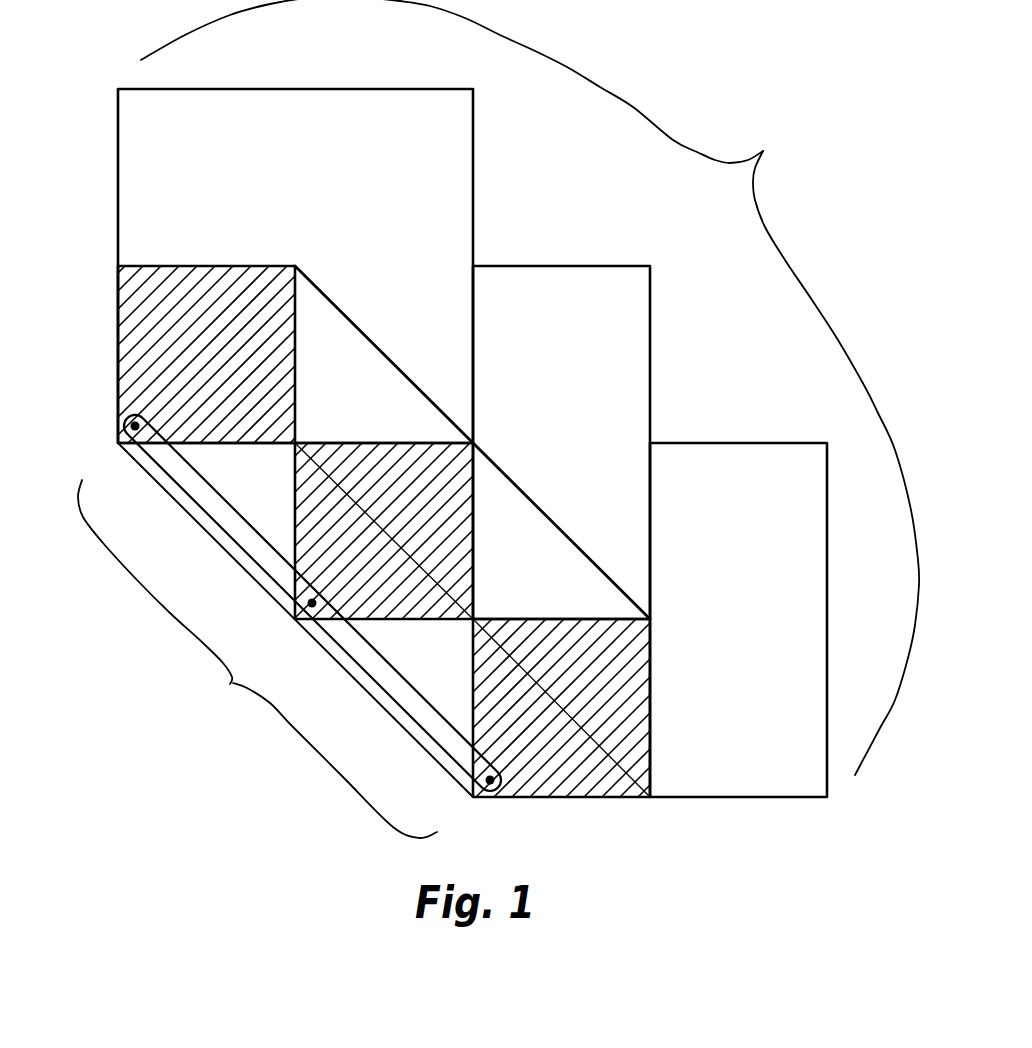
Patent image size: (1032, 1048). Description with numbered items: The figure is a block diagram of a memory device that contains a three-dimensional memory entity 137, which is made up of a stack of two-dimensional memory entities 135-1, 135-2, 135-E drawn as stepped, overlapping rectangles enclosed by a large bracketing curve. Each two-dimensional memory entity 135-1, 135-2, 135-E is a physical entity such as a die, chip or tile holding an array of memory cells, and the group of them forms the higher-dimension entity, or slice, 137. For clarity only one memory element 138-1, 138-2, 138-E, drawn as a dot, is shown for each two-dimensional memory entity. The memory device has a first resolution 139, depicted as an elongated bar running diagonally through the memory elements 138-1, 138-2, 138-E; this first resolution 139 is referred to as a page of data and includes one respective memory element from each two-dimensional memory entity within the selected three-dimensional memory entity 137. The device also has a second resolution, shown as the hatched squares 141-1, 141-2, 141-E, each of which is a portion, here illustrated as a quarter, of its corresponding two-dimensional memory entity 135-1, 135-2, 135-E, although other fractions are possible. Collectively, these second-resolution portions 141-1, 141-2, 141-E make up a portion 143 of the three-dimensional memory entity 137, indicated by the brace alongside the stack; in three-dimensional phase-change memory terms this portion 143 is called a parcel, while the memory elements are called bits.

The two-dimensional memory entity 135-1 is at (371, 100).
The two-dimensional memory entity 135-2 is at (548, 278).
The two-dimensional memory entity 135-E is at (726, 455).
The three-dimensional memory entity 137 is at (530, 387).
The memory element 138-1 is at (124, 420).
The memory element 138-2 is at (302, 601).
The memory element 138-E is at (477, 793).
The first resolution 139 is at (401, 712).
The second resolution 141-1 is at (206, 354).
The second resolution 141-2 is at (384, 531).
The second resolution 141-E is at (561, 708).
The portion of the three-dimensional memory entity 143 is at (257, 659).